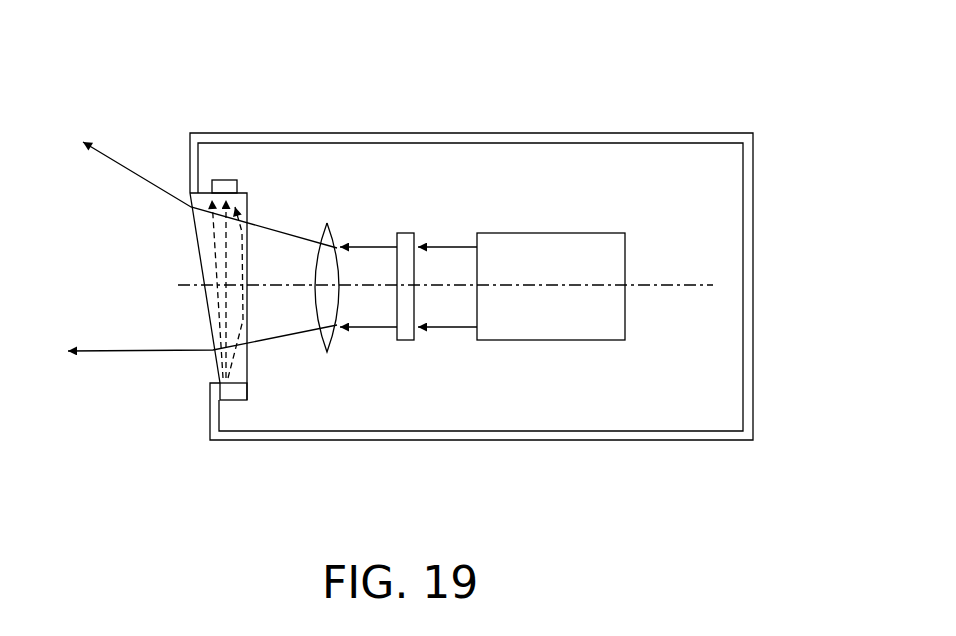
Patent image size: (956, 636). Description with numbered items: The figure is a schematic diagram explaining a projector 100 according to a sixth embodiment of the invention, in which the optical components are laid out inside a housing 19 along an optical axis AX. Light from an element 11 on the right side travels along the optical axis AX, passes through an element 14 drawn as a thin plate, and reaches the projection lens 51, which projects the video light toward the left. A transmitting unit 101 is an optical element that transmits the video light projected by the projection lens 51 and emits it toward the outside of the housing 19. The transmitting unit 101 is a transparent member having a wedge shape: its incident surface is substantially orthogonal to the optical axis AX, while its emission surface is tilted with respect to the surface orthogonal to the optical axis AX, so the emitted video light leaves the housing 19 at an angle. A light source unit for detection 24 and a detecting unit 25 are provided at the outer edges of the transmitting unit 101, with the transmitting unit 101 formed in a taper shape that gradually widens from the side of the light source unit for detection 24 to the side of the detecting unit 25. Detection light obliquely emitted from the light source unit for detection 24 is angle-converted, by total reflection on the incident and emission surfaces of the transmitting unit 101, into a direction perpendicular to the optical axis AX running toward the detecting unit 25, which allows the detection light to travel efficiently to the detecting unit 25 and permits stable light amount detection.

The projector 100 is at (218, 64).
The housing 19 is at (688, 441).
The detecting unit 25 is at (225, 180).
The light source unit for detection 24 is at (232, 400).
The transmitting unit 101 is at (217, 368).
The projection lens 51 is at (327, 223).
The optical plate 14 is at (407, 233).
The light source unit 11 is at (607, 233).
The optical axis AX is at (692, 285).